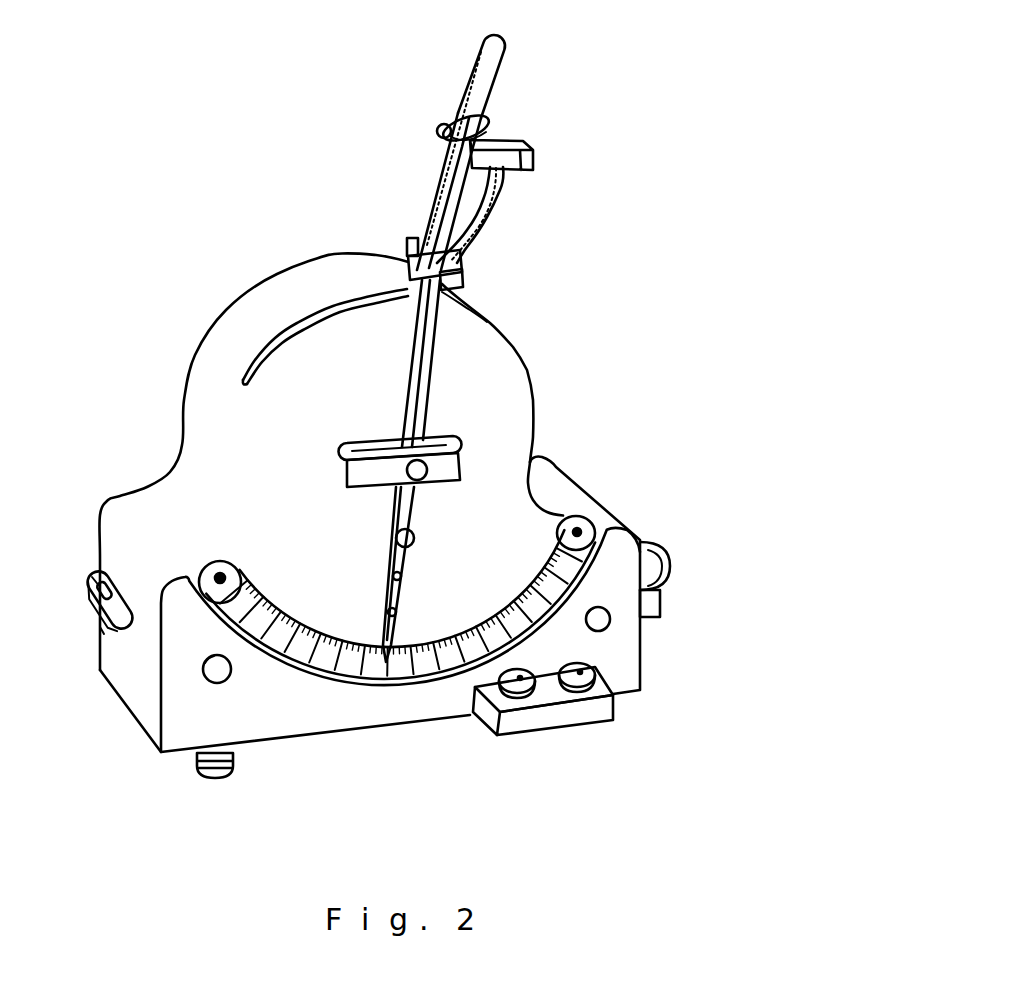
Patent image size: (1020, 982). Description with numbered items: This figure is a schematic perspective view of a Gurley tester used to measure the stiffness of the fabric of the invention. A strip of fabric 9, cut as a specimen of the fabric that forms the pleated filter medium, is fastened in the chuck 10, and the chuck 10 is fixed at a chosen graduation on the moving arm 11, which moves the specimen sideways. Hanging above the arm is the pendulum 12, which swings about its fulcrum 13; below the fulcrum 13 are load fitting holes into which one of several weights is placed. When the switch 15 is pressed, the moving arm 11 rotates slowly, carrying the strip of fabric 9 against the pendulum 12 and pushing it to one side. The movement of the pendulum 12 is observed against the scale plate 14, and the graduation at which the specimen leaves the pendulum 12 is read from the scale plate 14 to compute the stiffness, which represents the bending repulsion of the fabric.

The strip of fabric 9 is at (490, 213).
The chuck 10 is at (523, 148).
The moving arm 11 is at (440, 181).
The pendulum 12 is at (405, 250).
The fulcrum 13 is at (458, 448).
The scale plate 14 is at (578, 512).
The switch 15 is at (595, 668).